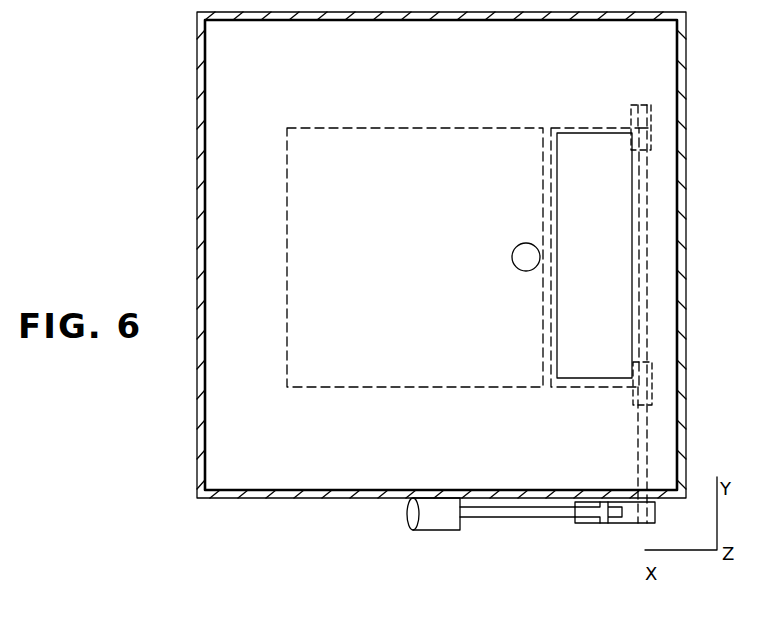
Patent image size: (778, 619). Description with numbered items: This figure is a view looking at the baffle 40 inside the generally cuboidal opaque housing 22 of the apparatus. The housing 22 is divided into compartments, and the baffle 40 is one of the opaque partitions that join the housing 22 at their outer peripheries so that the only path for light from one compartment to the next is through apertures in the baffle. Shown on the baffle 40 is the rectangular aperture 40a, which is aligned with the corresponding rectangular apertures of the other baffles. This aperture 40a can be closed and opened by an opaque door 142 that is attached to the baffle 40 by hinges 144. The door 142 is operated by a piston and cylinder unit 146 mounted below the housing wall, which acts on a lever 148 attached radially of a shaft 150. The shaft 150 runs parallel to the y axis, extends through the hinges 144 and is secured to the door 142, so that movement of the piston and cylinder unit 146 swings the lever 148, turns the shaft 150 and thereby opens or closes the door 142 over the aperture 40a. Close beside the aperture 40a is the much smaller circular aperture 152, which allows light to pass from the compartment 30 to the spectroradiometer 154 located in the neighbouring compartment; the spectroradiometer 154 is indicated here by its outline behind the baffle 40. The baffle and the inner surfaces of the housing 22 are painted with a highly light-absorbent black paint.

The housing 22 is at (200, 138).
The compartment 30 is at (442, 72).
The baffle 40 is at (240, 86).
The aperture 40a is at (612, 229).
The door 142 is at (582, 316).
The hinges 144 is at (645, 128).
The piston and cylinder unit 146 is at (450, 533).
The lever 148 is at (612, 528).
The shaft 150 is at (642, 440).
The aperture 152 is at (513, 257).
The spectroradiometer 154 is at (373, 352).